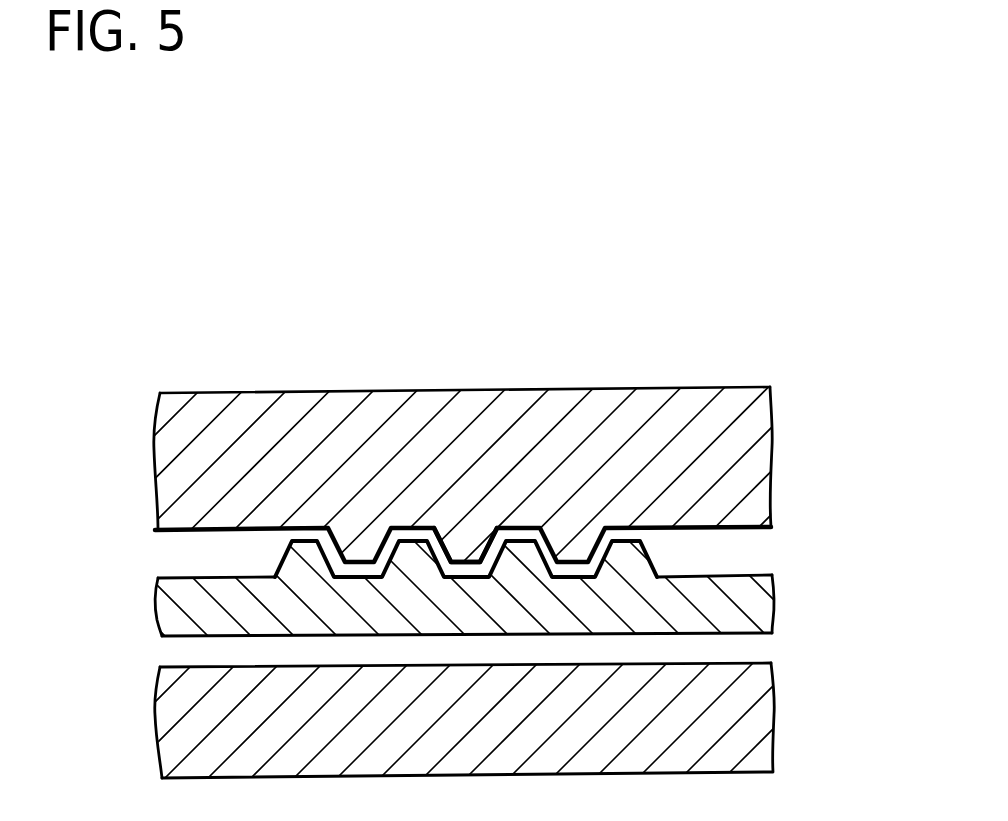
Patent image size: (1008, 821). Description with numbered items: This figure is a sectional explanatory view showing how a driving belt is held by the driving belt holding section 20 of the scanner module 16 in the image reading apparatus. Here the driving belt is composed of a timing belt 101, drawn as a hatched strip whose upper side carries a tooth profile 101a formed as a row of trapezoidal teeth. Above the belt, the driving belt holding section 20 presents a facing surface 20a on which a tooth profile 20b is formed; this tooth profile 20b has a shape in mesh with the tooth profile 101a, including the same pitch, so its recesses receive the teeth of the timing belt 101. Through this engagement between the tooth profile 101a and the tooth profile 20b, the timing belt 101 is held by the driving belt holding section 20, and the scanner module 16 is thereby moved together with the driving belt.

The scanner module 16 is at (843, 349).
The driving belt holding section 20 is at (760, 497).
The facing surface 20a is at (684, 536).
The tooth profile 20b is at (462, 548).
The timing belt 101 is at (177, 602).
The tooth profile 101a is at (300, 554).